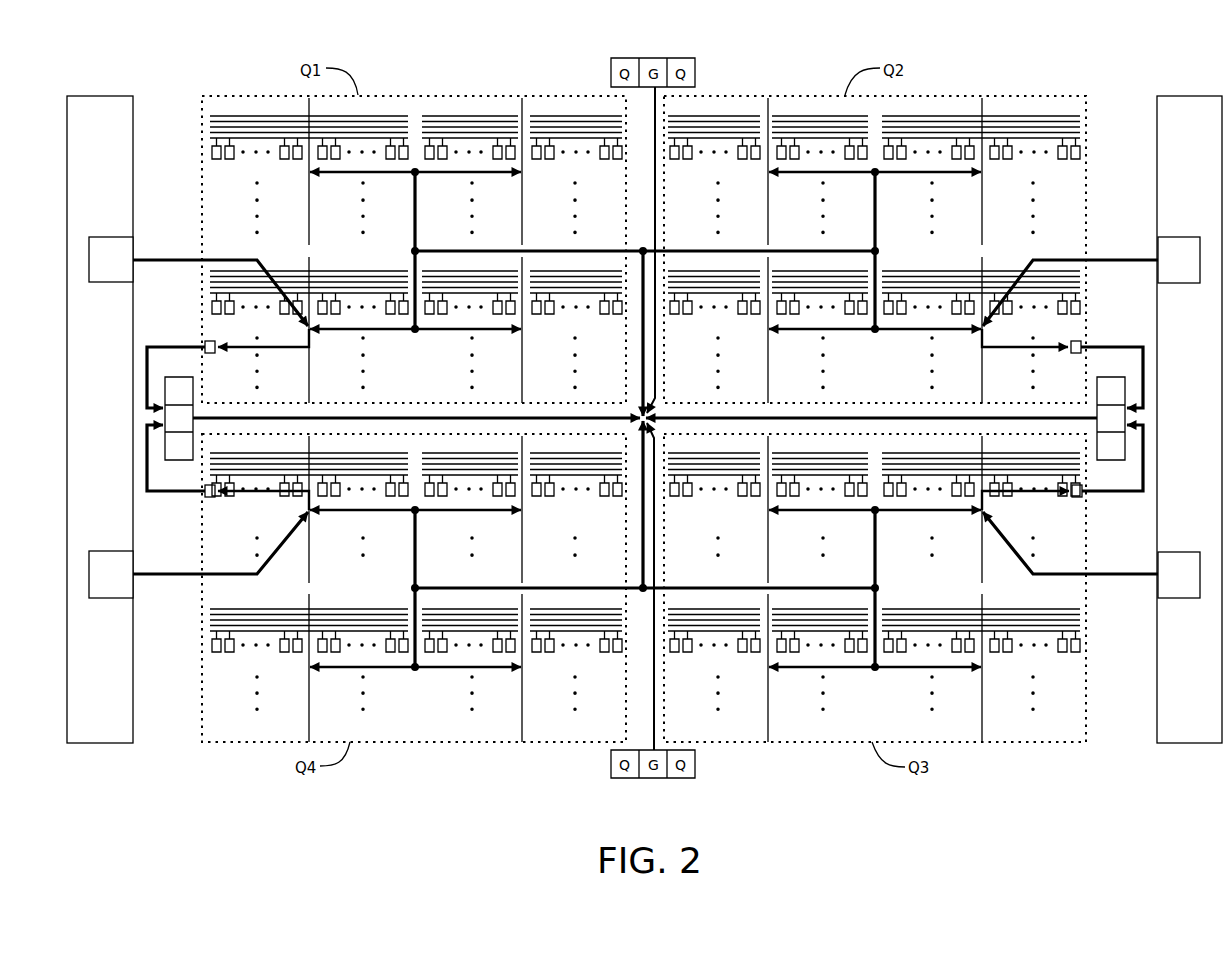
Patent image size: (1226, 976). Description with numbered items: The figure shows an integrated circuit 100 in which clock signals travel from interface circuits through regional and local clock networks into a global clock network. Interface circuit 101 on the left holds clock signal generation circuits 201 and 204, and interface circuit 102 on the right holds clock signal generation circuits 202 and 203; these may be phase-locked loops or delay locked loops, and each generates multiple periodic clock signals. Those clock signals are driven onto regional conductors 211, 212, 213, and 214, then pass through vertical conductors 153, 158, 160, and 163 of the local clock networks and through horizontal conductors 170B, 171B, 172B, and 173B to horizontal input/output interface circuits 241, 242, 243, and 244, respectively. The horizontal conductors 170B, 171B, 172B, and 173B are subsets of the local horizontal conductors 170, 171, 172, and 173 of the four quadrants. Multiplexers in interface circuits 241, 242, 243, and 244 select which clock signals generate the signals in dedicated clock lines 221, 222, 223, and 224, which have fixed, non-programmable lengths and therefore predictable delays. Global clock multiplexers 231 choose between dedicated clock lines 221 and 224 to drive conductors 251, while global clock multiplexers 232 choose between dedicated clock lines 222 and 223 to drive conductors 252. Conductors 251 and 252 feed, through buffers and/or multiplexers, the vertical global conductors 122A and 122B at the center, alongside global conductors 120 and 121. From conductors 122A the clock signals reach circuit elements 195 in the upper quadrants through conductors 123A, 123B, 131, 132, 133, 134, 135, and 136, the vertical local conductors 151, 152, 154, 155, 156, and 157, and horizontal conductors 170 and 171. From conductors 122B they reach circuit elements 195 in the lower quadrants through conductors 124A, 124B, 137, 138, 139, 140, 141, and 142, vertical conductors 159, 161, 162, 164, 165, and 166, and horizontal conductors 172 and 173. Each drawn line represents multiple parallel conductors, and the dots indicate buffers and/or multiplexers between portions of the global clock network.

The integrated circuit 100 is at (424, 52).
The interface circuit 101 is at (96, 96).
The interface circuit 102 is at (1185, 96).
The conductors 120 is at (658, 187).
The conductors 121 is at (658, 508).
The conductors 122A is at (641, 337).
The conductors 122B is at (640, 503).
The conductors 123A is at (599, 250).
The conductors 123B is at (733, 251).
The conductors 124A is at (740, 587).
The conductors 124B is at (560, 572).
The conductors 131 is at (413, 210).
The conductors 132 is at (430, 174).
The conductors 133 is at (412, 334).
The conductors 134 is at (873, 205).
The conductors 135 is at (920, 173).
The conductors 136 is at (865, 333).
The conductors 137 is at (878, 545).
The conductors 138 is at (935, 515).
The conductors 139 is at (876, 670).
The conductors 140 is at (413, 545).
The conductors 141 is at (432, 512).
The conductors 142 is at (412, 672).
The vertical conductors 151 is at (308, 206).
The vertical conductors 152 is at (520, 98).
The vertical conductors 153 is at (311, 348).
The vertical conductors 154 is at (520, 350).
The vertical conductors 155 is at (770, 98).
The vertical conductors 156 is at (985, 222).
The vertical conductors 157 is at (767, 356).
The vertical conductors 158 is at (980, 345).
The vertical conductors 159 is at (768, 528).
The vertical conductors 160 is at (984, 567).
The vertical conductors 161 is at (768, 695).
The vertical conductors 162 is at (982, 698).
The vertical conductors 163 is at (315, 528).
The vertical conductors 164 is at (520, 530).
The vertical conductors 165 is at (308, 685).
The vertical conductors 166 is at (520, 700).
The horizontal conductors 170 is at (252, 146).
The horizontal conductors 170B is at (283, 351).
The horizontal conductors 171 is at (1031, 150).
The horizontal conductors 171B is at (1007, 355).
The horizontal conductors 172 is at (942, 458).
The horizontal conductors 172B is at (1000, 495).
The horizontal conductors 173 is at (278, 458).
The horizontal conductors 173B is at (289, 495).
The circuit elements 195 is at (216, 160).
The clock signal generation circuit 201 is at (105, 237).
The clock signal generation circuit 202 is at (1170, 237).
The clock signal generation circuit 203 is at (1170, 552).
The clock signal generation circuit 204 is at (110, 551).
The conductors 211 is at (154, 260).
The conductors 212 is at (1103, 260).
The conductors 213 is at (1112, 577).
The conductors 214 is at (150, 578).
The dedicated clock line 221 is at (157, 345).
The dedicated clock line 222 is at (1101, 346).
The dedicated clock line 223 is at (1105, 493).
The dedicated clock line 224 is at (158, 497).
The global clock multiplexers 231 is at (196, 408).
The global clock multiplexers 232 is at (1094, 407).
The horizontal input/output interface circuit 241 is at (214, 344).
The horizontal input/output interface circuit 242 is at (1069, 342).
The horizontal input/output interface circuit 243 is at (1076, 500).
The horizontal input/output interface circuit 244 is at (218, 500).
The conductors 251 is at (383, 412).
The conductors 252 is at (861, 412).